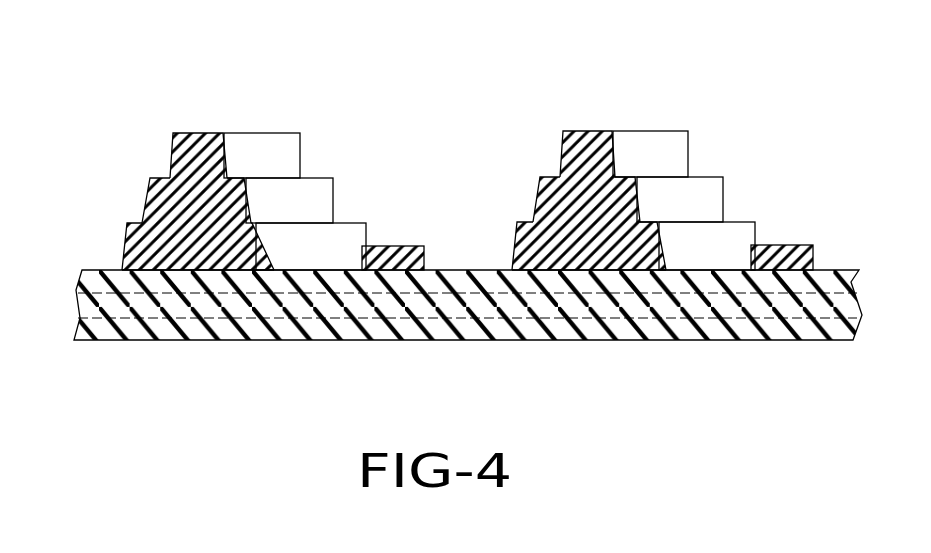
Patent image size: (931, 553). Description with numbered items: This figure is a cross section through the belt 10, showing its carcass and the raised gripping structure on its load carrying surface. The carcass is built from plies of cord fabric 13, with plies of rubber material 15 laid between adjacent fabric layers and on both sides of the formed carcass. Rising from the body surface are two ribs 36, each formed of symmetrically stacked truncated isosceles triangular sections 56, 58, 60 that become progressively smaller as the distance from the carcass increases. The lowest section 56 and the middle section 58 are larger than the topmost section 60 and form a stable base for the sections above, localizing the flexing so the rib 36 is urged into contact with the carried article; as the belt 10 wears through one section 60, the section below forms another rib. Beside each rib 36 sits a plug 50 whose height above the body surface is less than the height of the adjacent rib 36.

The belt 10 is at (434, 356).
The cord fabric 13 is at (283, 292).
The plies of rubber material 15 is at (90, 281).
The rib 36 is at (407, 140).
The plug 50 is at (394, 246).
The section 56 is at (142, 250).
The section 58 is at (163, 207).
The section 60 is at (188, 155).